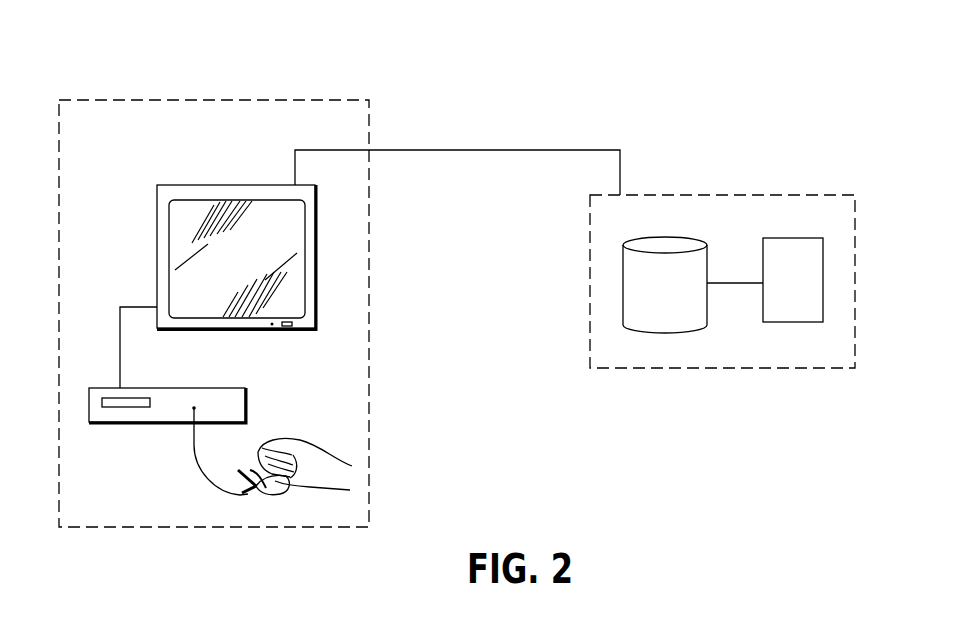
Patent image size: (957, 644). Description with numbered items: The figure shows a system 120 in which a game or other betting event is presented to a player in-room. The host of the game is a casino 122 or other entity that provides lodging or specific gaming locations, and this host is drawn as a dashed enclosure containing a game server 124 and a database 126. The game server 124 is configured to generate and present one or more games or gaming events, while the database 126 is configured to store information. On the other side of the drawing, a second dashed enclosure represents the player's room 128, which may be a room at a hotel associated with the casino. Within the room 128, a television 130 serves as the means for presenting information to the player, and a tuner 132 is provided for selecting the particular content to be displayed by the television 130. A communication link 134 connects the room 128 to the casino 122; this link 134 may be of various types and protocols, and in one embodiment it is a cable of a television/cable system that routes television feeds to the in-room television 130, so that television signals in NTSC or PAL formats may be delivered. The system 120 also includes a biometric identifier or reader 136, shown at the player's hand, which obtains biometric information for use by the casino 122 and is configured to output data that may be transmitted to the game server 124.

The system 120 is at (766, 98).
The casino 122 is at (802, 195).
The game server 124 is at (793, 307).
The database 126 is at (678, 322).
The room 128 is at (298, 100).
The television 130 is at (308, 248).
The tuner 132 is at (187, 388).
The communication link 134 is at (430, 150).
The biometric identifier 136 is at (263, 495).